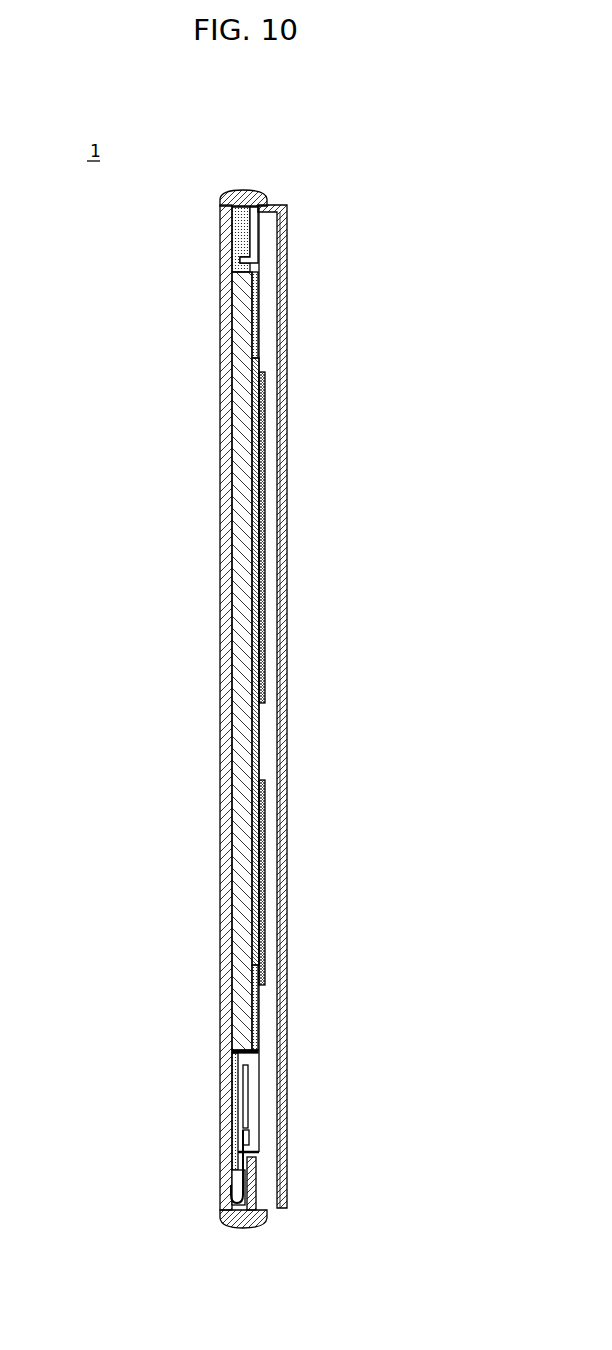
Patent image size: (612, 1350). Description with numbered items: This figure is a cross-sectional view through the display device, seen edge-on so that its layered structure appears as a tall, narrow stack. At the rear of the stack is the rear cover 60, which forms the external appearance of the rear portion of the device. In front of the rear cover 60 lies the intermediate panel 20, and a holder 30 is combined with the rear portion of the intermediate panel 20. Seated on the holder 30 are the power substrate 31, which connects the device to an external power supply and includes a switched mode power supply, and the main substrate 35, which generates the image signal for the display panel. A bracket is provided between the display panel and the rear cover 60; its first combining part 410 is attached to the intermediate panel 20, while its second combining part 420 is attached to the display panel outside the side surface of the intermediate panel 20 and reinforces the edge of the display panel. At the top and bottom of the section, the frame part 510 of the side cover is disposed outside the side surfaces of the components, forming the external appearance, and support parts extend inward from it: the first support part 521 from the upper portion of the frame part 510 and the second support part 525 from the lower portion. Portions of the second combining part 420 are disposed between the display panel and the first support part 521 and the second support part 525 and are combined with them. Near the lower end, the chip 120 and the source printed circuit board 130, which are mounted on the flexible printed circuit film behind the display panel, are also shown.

The intermediate panel 20 is at (240, 503).
The holder 30 is at (256, 741).
The power substrate 31 is at (265, 443).
The main substrate 35 is at (262, 870).
The rear cover 60 is at (284, 318).
The chip 120 is at (250, 1143).
The source printed circuit board 130 is at (247, 1100).
The first combining part 410 is at (255, 314).
The second combining part 420 is at (242, 236).
The frame part 510 is at (240, 190).
The first support part 521 is at (258, 245).
The second support part 525 is at (253, 1180).